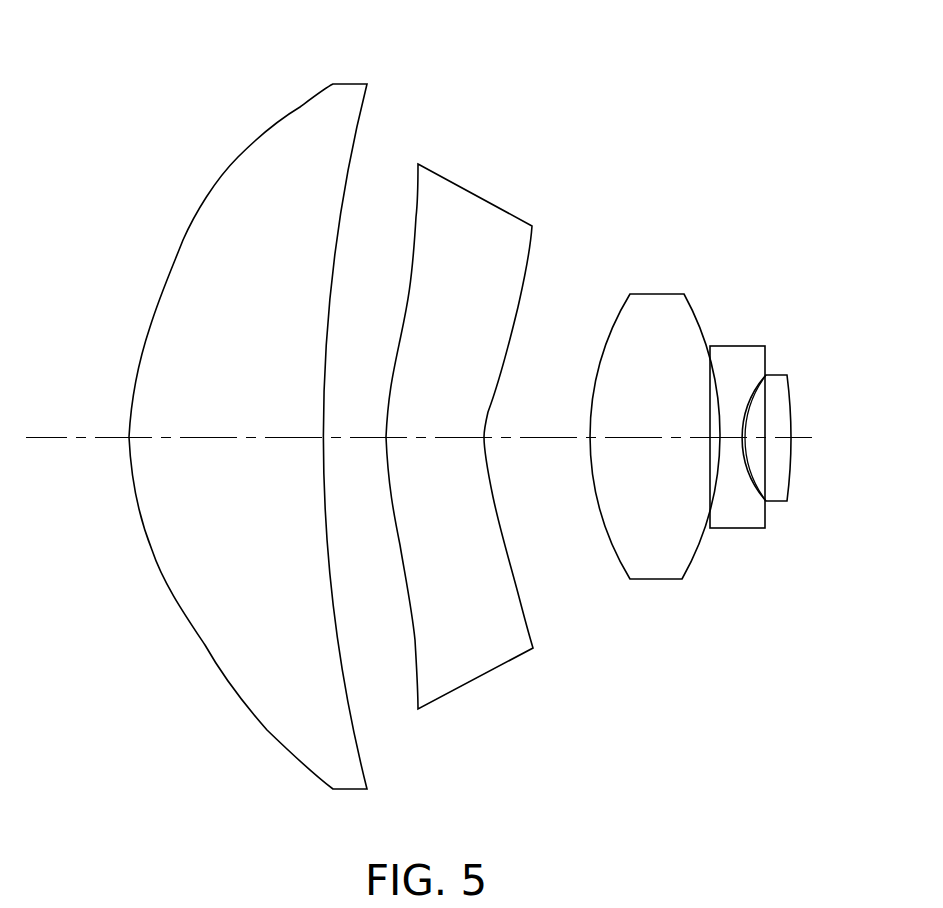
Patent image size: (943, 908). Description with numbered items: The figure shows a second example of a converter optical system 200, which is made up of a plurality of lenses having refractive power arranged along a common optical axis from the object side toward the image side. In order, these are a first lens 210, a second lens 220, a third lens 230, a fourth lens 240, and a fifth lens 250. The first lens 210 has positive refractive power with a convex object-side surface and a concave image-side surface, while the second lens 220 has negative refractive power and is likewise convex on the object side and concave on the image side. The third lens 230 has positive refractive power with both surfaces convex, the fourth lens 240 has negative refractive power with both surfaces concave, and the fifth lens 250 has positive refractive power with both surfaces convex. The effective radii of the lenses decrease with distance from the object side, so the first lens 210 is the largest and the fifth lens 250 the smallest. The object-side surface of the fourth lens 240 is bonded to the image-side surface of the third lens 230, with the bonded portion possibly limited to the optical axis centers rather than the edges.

The converter optical system 200 is at (507, 83).
The first lens 210 is at (367, 777).
The second lens 220 is at (505, 663).
The third lens 230 is at (656, 580).
The fourth lens 240 is at (735, 528).
The fifth lens 250 is at (773, 502).